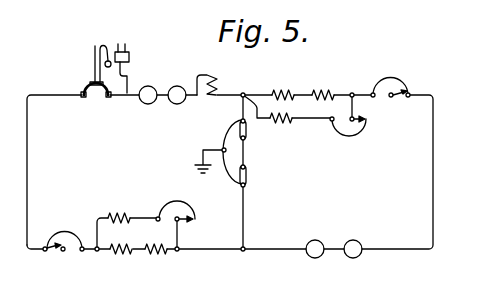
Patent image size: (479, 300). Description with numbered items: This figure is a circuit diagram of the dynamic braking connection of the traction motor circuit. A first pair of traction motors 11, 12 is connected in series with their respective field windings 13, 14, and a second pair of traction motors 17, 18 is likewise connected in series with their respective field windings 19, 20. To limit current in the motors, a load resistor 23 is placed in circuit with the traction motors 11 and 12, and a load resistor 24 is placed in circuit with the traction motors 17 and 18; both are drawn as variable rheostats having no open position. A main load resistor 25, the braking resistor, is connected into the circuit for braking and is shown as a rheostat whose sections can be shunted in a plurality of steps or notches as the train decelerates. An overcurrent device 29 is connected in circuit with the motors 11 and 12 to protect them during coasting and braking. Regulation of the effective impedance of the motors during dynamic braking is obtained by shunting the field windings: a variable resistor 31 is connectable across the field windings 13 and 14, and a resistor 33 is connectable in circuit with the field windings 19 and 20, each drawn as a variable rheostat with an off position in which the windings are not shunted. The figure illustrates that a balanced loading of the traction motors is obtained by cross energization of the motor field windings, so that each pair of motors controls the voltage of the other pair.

The traction motor 11 is at (148, 95).
The traction motor 12 is at (177, 95).
The field winding 13 is at (285, 89).
The field winding 14 is at (322, 89).
The traction motor 17 is at (315, 249).
The traction motor 18 is at (353, 249).
The field winding 19 is at (118, 256).
The field winding 20 is at (155, 256).
The load resistor 23 is at (393, 78).
The load resistor 24 is at (62, 232).
The main load resistor 25 is at (228, 135).
The overcurrent device 29 is at (86, 89).
The variable resistor 31 is at (349, 139).
The resistor 33 is at (172, 201).